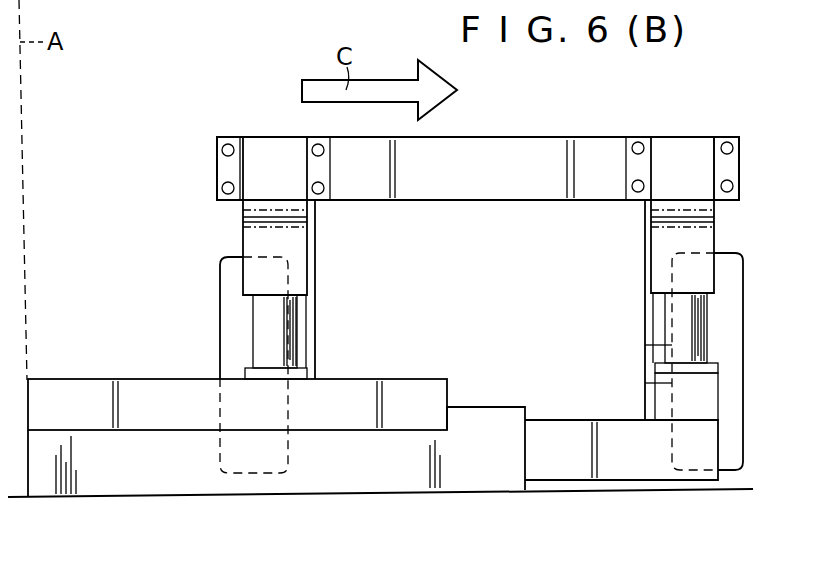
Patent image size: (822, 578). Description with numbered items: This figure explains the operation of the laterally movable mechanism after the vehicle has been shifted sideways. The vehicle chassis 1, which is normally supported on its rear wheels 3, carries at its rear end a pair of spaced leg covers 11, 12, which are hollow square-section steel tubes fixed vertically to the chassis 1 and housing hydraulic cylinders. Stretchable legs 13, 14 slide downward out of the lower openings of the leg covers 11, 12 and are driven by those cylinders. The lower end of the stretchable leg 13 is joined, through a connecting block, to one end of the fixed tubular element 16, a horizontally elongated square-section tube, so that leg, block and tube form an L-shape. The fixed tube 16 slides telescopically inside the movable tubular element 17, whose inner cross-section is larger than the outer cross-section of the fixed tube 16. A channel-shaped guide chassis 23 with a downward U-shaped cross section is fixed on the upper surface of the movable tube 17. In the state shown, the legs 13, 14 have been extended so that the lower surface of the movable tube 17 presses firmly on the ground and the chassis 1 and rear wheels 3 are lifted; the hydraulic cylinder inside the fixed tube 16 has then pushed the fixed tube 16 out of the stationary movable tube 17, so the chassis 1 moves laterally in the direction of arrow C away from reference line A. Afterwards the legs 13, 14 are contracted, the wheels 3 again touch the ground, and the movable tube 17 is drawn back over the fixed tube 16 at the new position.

The vehicle chassis 1 is at (535, 152).
The rear wheels 3 is at (229, 308).
The leg cover 11 is at (707, 207).
The leg cover 12 is at (246, 240).
The stretchable leg 13 is at (705, 312).
The stretchable leg 14 is at (267, 338).
The fixed tubular element 16 is at (644, 472).
The movable tubular element 17 is at (484, 490).
The channel-shaped guide chassis 23 is at (424, 390).